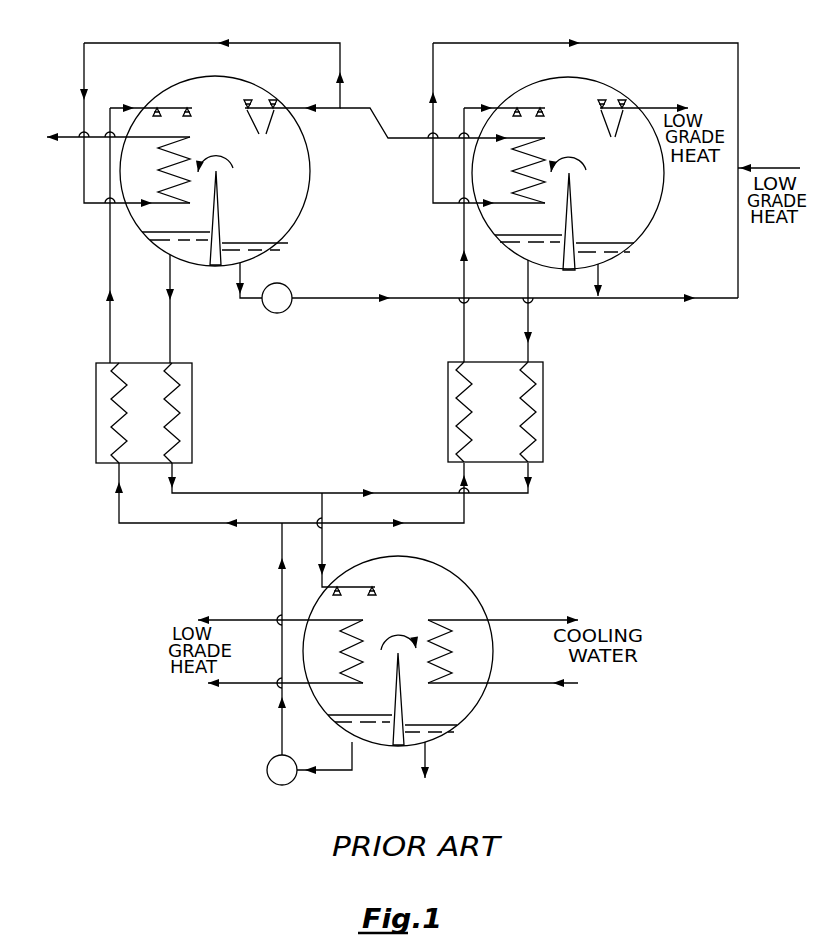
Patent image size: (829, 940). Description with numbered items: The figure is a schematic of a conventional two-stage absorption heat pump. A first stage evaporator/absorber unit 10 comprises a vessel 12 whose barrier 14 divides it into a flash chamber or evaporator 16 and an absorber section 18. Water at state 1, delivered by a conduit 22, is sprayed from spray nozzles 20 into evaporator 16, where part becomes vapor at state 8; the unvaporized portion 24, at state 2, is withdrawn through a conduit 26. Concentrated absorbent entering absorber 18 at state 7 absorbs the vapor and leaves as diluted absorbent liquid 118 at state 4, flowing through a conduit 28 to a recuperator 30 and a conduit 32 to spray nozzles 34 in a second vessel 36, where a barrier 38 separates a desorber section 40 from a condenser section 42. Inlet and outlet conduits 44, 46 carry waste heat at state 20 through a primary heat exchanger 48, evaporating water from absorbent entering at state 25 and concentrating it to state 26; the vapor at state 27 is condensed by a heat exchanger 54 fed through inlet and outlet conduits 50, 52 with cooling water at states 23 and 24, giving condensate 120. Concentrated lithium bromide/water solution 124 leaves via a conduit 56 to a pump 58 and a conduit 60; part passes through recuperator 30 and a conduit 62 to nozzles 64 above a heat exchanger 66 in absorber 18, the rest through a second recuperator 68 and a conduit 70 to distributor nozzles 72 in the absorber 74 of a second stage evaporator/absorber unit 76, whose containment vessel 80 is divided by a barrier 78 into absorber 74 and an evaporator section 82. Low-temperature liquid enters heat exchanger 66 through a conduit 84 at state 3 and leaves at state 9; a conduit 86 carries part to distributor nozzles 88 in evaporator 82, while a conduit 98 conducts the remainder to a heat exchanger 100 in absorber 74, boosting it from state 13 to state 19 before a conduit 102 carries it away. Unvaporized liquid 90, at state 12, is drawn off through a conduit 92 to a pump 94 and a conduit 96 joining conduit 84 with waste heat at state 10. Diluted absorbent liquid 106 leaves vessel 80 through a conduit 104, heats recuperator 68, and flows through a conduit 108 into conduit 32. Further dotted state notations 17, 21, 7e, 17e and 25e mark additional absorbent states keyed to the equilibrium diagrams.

The water inlet state 1 is at (644, 96).
The cooled water outlet state 2 is at (620, 271).
The absorber heat exchanger inlet state 3 is at (437, 219).
The diluted absorbent outlet state 4 is at (516, 273).
The concentrated absorbent inlet state 7 is at (480, 93).
The evaporation state point 7e is at (530, 127).
The first stage vapor state 8 is at (760, 160).
The heated water state 9 is at (377, 147).
The first stage evaporator/absorber unit 10 is at (652, 240).
The vessel 12 is at (674, 194).
The second heat exchanger inlet state 13 is at (84, 220).
The barrier 14 is at (577, 213).
The flash chamber 16 is at (627, 198).
The state point 17 is at (151, 97).
The evaporation state point 17e is at (175, 128).
The absorber section 18 is at (507, 179).
The twice-heated water state 19 is at (118, 151).
The spray nozzles 20 is at (429, 406).
The state point 21 is at (231, 607).
The conduit 22 is at (673, 107).
The cooling water inlet state 23 is at (521, 702).
The unvaporized liquid portion 24 is at (630, 247).
The desorber inlet absorbent state 25 is at (341, 541).
The evaporation state point 25e is at (359, 611).
The conduit 26 is at (593, 275).
The desorbed vapor state 27 is at (401, 618).
The conduit 28 is at (533, 322).
The heat exchanger 30 is at (545, 396).
The conduit 32 is at (322, 553).
The spray nozzles 34 is at (368, 589).
The second vessel 36 is at (404, 642).
The barrier 38 is at (391, 688).
The desorber section 40 is at (390, 680).
The condenser section 42 is at (484, 668).
The inlet conduit 44 is at (260, 678).
The outlet conduit 46 is at (252, 618).
The primary heat exchanger 48 is at (338, 651).
The inlet conduit 50 is at (518, 621).
The outlet conduit 52 is at (523, 682).
The heat exchanger 54 is at (454, 651).
The conduit 56 is at (333, 776).
The pump 58 is at (270, 780).
The conduit 60 is at (278, 739).
The conduit 62 is at (460, 320).
The nozzles 64 is at (529, 111).
The heat exchanger 66 is at (198, 526).
The second recuperator 68 is at (193, 402).
The conduit 70 is at (108, 320).
The distributor nozzles 72 is at (168, 110).
The absorber section 74 is at (156, 189).
The second stage evaporator/absorber unit 76 is at (315, 217).
The barrier 78 is at (222, 219).
The containment vessel 80 is at (312, 197).
The evaporator section 82 is at (272, 204).
The conduit 84 is at (573, 42).
The conduit 86 is at (385, 131).
The distributor nozzles 88 is at (260, 128).
The unvaporized liquid 90 is at (270, 252).
The conduit 92 is at (233, 273).
The pump 94 is at (262, 311).
The conduit 96 is at (743, 248).
The conduit 98 is at (272, 42).
The heat exchanger 100 is at (196, 189).
The conduit 102 is at (76, 136).
The conduit 104 is at (170, 326).
The diluted absorbent liquid 106 is at (183, 247).
The conduit 108 is at (226, 493).
The diluted absorbent liquid 118 is at (552, 256).
The condensate 120 is at (453, 731).
The lithium bromide/water solution 124 is at (357, 731).